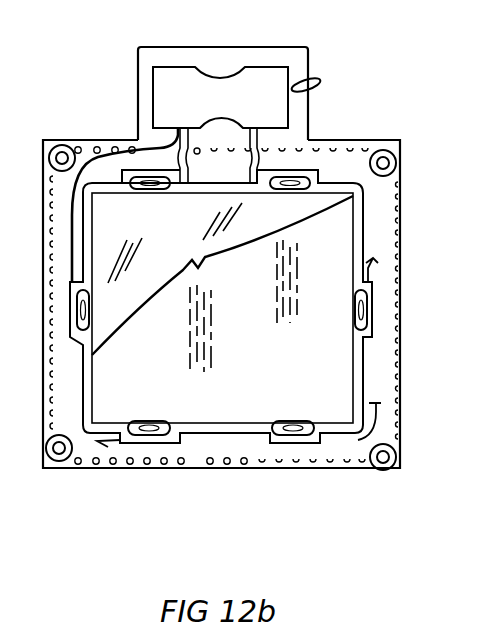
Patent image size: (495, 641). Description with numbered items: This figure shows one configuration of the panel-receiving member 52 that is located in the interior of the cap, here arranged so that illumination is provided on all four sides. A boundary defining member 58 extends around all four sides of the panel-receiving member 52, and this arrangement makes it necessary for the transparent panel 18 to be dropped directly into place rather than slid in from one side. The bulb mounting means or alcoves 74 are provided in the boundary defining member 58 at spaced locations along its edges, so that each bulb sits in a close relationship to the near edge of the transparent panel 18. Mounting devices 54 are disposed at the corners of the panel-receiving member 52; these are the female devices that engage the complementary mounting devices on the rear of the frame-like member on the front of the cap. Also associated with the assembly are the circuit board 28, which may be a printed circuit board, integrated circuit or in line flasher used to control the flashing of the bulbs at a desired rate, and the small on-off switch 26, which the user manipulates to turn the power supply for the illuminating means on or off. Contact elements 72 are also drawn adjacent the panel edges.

The transparent panel 18 is at (118, 212).
The on-off switch 26 is at (314, 79).
The circuit board 28 is at (236, 90).
The panel-receiving member 52 is at (48, 298).
The mounting devices 54 is at (394, 154).
The boundary defining member 58 is at (83, 358).
The contact pads 72 is at (357, 312).
The bulb mounting means 74 is at (370, 318).